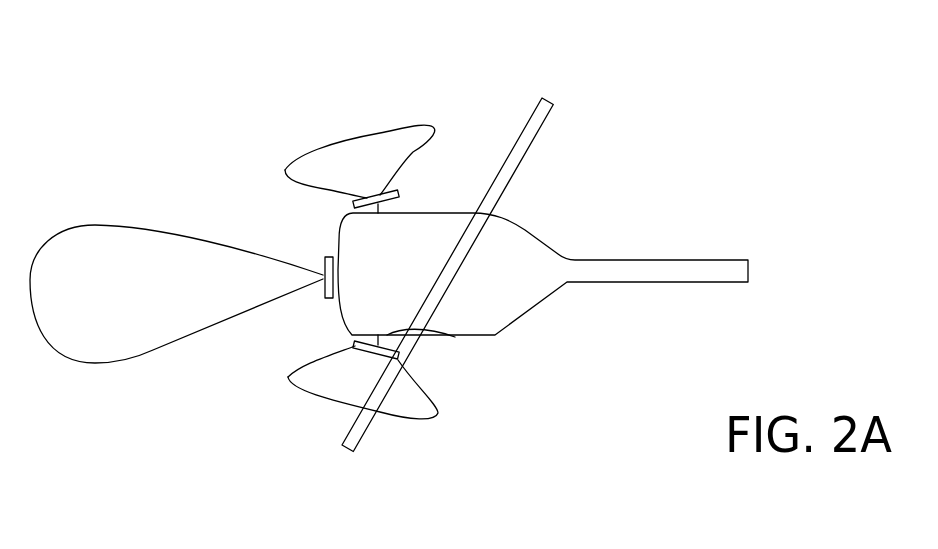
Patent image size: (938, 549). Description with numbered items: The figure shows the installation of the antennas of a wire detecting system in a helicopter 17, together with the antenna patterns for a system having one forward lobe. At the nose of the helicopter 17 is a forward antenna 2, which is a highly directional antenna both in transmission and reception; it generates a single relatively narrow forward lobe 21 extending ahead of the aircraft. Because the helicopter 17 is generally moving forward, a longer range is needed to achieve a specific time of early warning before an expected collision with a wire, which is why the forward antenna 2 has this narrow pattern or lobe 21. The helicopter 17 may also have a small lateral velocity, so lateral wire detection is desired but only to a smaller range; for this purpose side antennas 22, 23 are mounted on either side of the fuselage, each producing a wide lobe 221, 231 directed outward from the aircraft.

The forward antenna 2 is at (325, 282).
The helicopter 17 is at (517, 217).
The forward lobe 21 is at (125, 316).
The side antenna 22 is at (455, 337).
The side antenna 23 is at (418, 178).
The wide lobe 221 is at (318, 393).
The wide lobe 231 is at (350, 142).